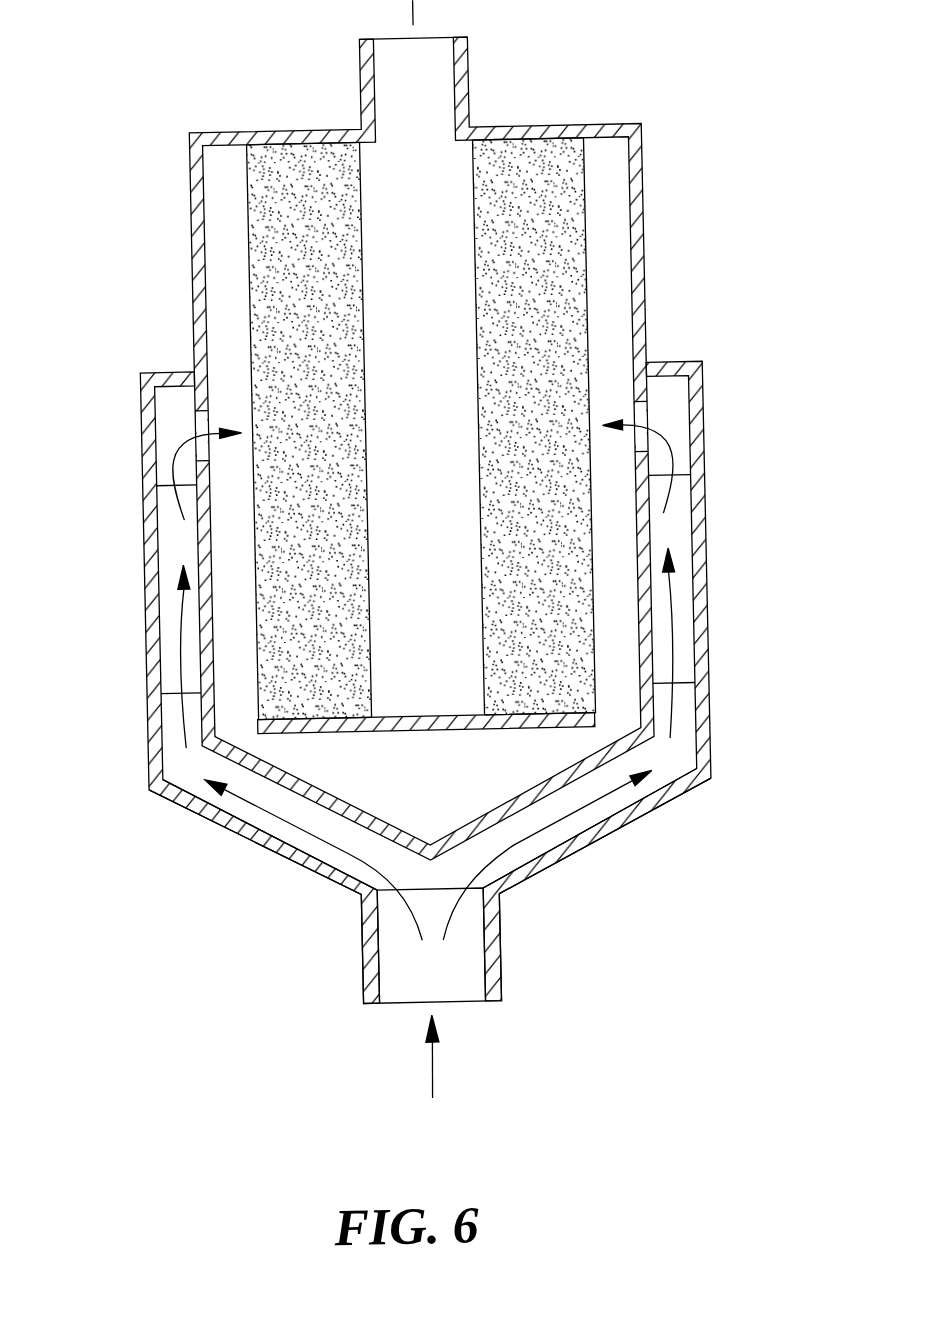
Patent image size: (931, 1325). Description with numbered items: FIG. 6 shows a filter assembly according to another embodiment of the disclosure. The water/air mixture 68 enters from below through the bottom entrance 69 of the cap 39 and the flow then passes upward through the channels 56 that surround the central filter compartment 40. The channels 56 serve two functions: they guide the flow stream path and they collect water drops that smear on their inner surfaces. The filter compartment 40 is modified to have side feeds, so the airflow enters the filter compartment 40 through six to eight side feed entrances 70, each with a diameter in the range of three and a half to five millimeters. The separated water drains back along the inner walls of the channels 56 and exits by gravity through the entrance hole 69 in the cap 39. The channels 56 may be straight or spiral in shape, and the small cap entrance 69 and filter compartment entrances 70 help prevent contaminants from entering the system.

The side feed entrances 70 is at (635, 448).
The channels 56 is at (181, 528).
The filter compartment 40 is at (446, 793).
The bottom entrance 69 is at (437, 992).
The cap 39 is at (612, 836).
The water/air mixture 68 is at (419, 1073).